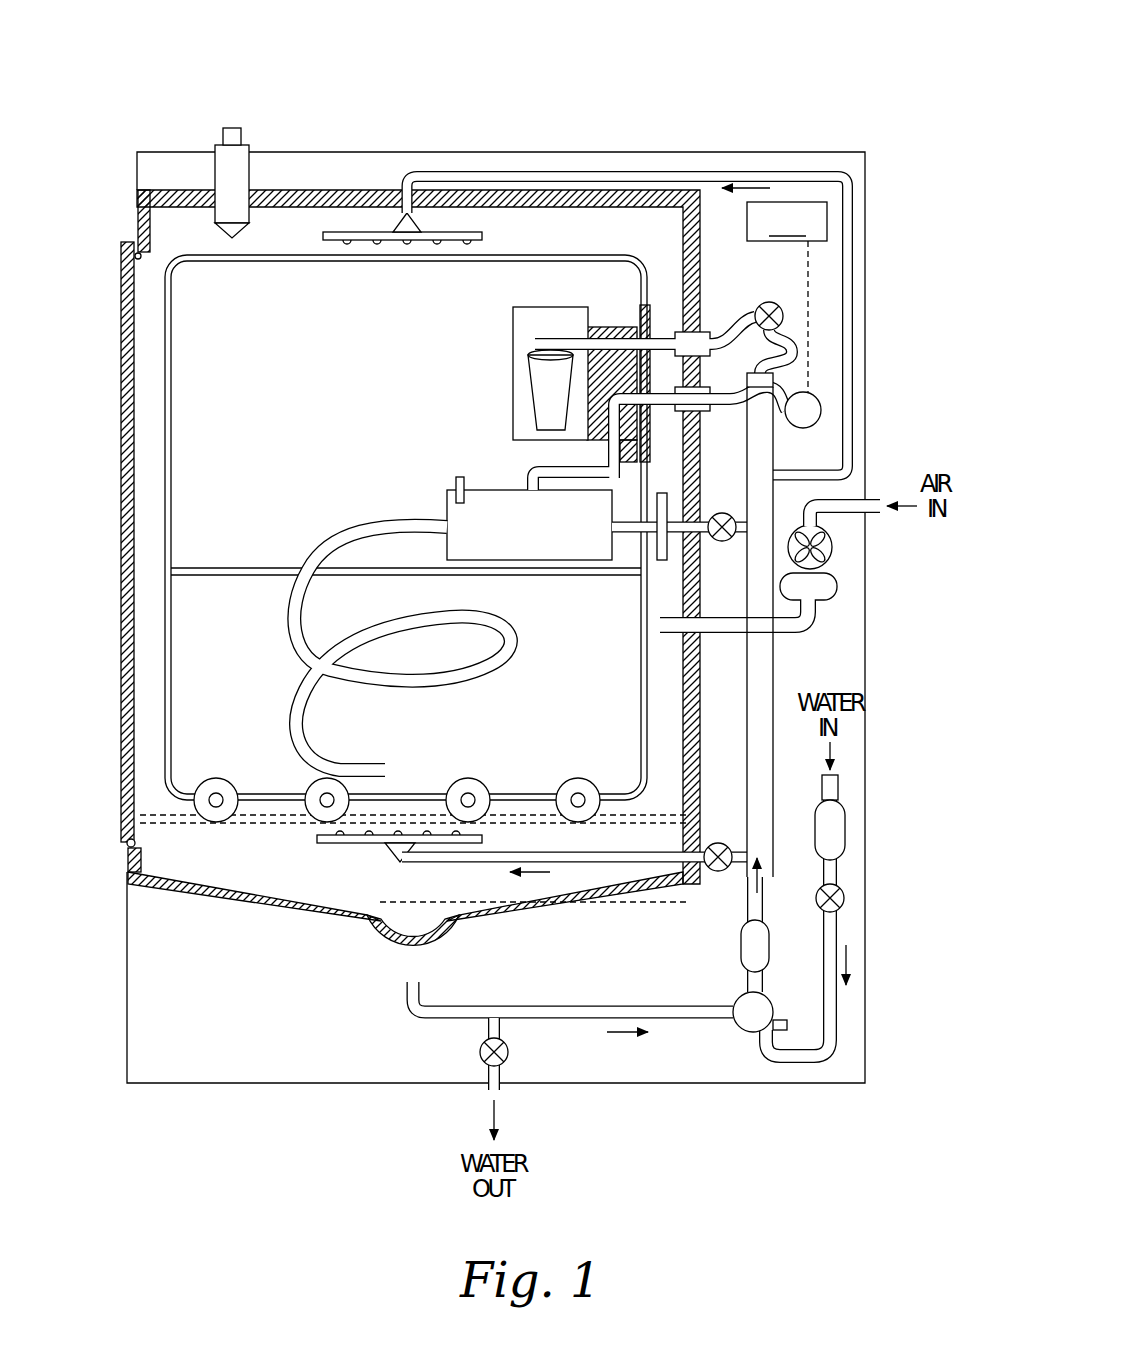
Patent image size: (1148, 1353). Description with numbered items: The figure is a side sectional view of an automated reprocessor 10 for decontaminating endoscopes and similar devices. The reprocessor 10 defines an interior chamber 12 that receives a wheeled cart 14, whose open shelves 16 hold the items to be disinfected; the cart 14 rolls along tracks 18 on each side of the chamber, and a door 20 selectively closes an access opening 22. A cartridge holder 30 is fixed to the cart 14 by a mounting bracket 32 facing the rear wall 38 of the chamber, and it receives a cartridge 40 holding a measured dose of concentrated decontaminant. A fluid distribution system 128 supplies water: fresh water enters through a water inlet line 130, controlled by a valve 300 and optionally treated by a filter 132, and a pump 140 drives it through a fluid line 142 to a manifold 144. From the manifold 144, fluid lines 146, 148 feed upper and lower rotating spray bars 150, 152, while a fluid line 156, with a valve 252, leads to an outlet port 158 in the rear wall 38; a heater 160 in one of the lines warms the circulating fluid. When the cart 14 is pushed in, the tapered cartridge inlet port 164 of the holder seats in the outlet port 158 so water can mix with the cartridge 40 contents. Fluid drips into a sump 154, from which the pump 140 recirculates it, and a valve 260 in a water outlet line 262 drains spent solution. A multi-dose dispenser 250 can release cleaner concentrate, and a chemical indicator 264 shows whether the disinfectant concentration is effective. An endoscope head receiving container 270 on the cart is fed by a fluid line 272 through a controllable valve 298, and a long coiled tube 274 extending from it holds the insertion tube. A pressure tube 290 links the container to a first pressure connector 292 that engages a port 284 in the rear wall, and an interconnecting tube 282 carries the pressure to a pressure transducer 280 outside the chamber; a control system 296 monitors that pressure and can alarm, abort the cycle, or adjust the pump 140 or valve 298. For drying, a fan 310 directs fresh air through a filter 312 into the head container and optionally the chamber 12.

The automated reprocessor 10 is at (327, 86).
The interior chamber 12 is at (282, 407).
The cart 14 is at (150, 686).
The shelves 16 is at (232, 568).
The tracks 18 is at (268, 824).
The door 20 is at (124, 545).
The access opening 22 is at (140, 800).
The cartridge holder 30 is at (513, 333).
The mounting bracket 32 is at (638, 318).
The rear wall 38 is at (686, 258).
The cartridge 40 is at (540, 405).
The fluid distribution system 128 is at (600, 1006).
The water inlet line 130 is at (838, 780).
The filter 132 is at (846, 835).
The pump 140 is at (748, 1032).
The fluid line 142 is at (746, 900).
The manifold 144 is at (760, 665).
The fluid line 146 is at (479, 171).
The fluid line 148 is at (462, 863).
The upper rotating spray bar 150 is at (362, 242).
The lower rotating spray bar 152 is at (362, 845).
The sump 154 is at (397, 942).
The fluid line 156 is at (722, 318).
The outlet port 158 is at (788, 352).
The heater 160 is at (740, 945).
The cartridge inlet port 164 is at (676, 332).
The multi-dose dispenser 250 is at (224, 172).
The valve 252 is at (781, 308).
The valve 260 is at (468, 1057).
The water outlet line 262 is at (502, 1030).
The chemical indicator 264 is at (456, 486).
The endoscope head receiving container 270 is at (447, 505).
The fluid line 272 is at (620, 534).
The coiled tube 274 is at (300, 640).
The pressure transducer 280 is at (812, 408).
The interconnecting tube 282 is at (775, 376).
The port 284 is at (792, 422).
The pressure tube 290 is at (538, 466).
The first pressure connector 292 is at (773, 455).
The control system 296 is at (787, 297).
The valve 298 is at (728, 552).
The valve 300 is at (845, 898).
The fan 310 is at (833, 545).
The filter 312 is at (838, 586).